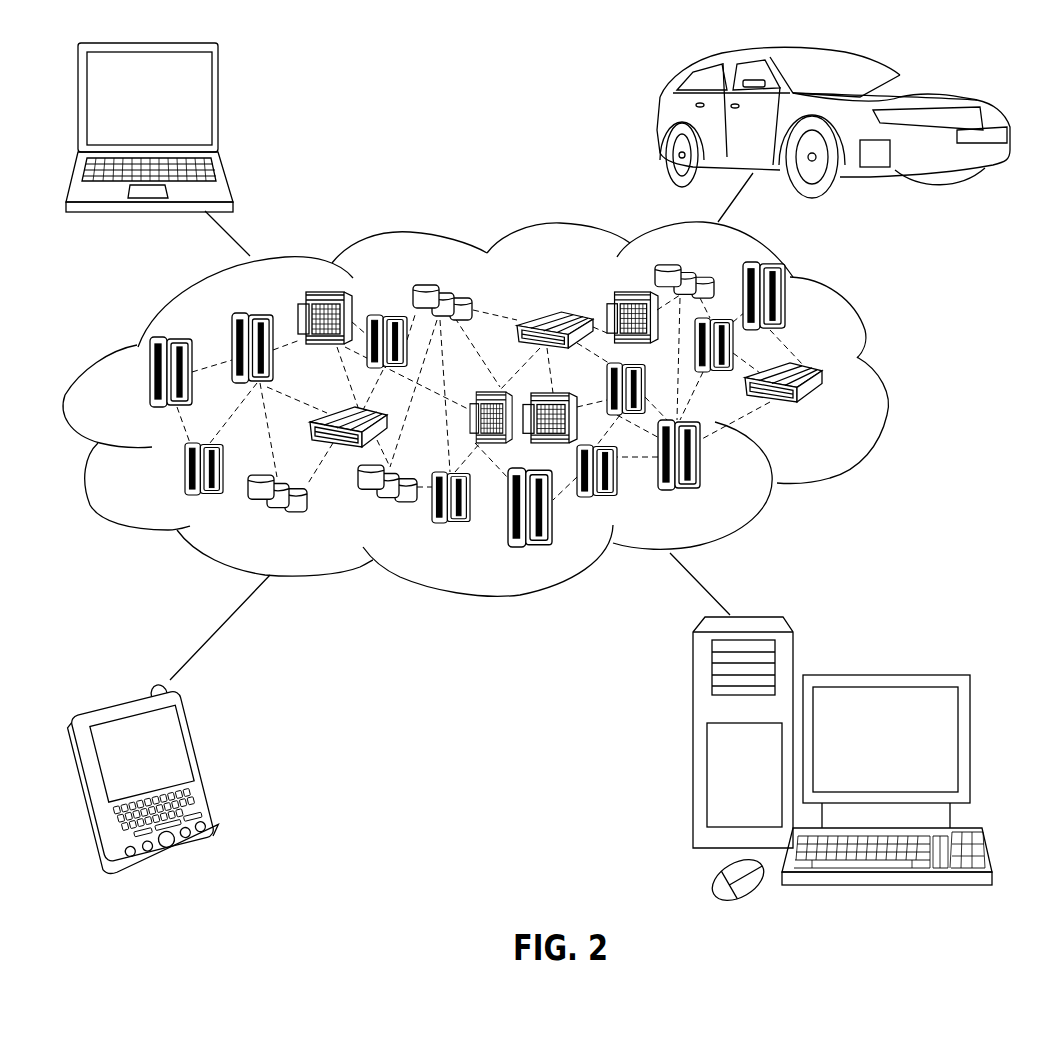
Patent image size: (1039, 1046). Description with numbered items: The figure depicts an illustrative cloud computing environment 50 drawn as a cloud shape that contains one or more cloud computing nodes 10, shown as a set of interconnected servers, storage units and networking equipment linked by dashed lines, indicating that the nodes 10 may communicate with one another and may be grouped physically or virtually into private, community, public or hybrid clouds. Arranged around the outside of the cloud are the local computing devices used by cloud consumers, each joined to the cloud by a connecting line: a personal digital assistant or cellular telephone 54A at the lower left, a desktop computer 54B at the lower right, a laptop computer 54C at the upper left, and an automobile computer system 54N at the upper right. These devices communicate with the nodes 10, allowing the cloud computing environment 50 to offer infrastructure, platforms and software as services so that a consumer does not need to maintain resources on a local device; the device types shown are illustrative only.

The cloud computing nodes 10 is at (826, 411).
The cloud computing environment 50 is at (885, 387).
The personal digital assistant or cellular telephone 54A is at (208, 770).
The desktop computer 54B is at (882, 672).
The laptop computer 54C is at (219, 107).
The automobile computer system 54N is at (662, 122).